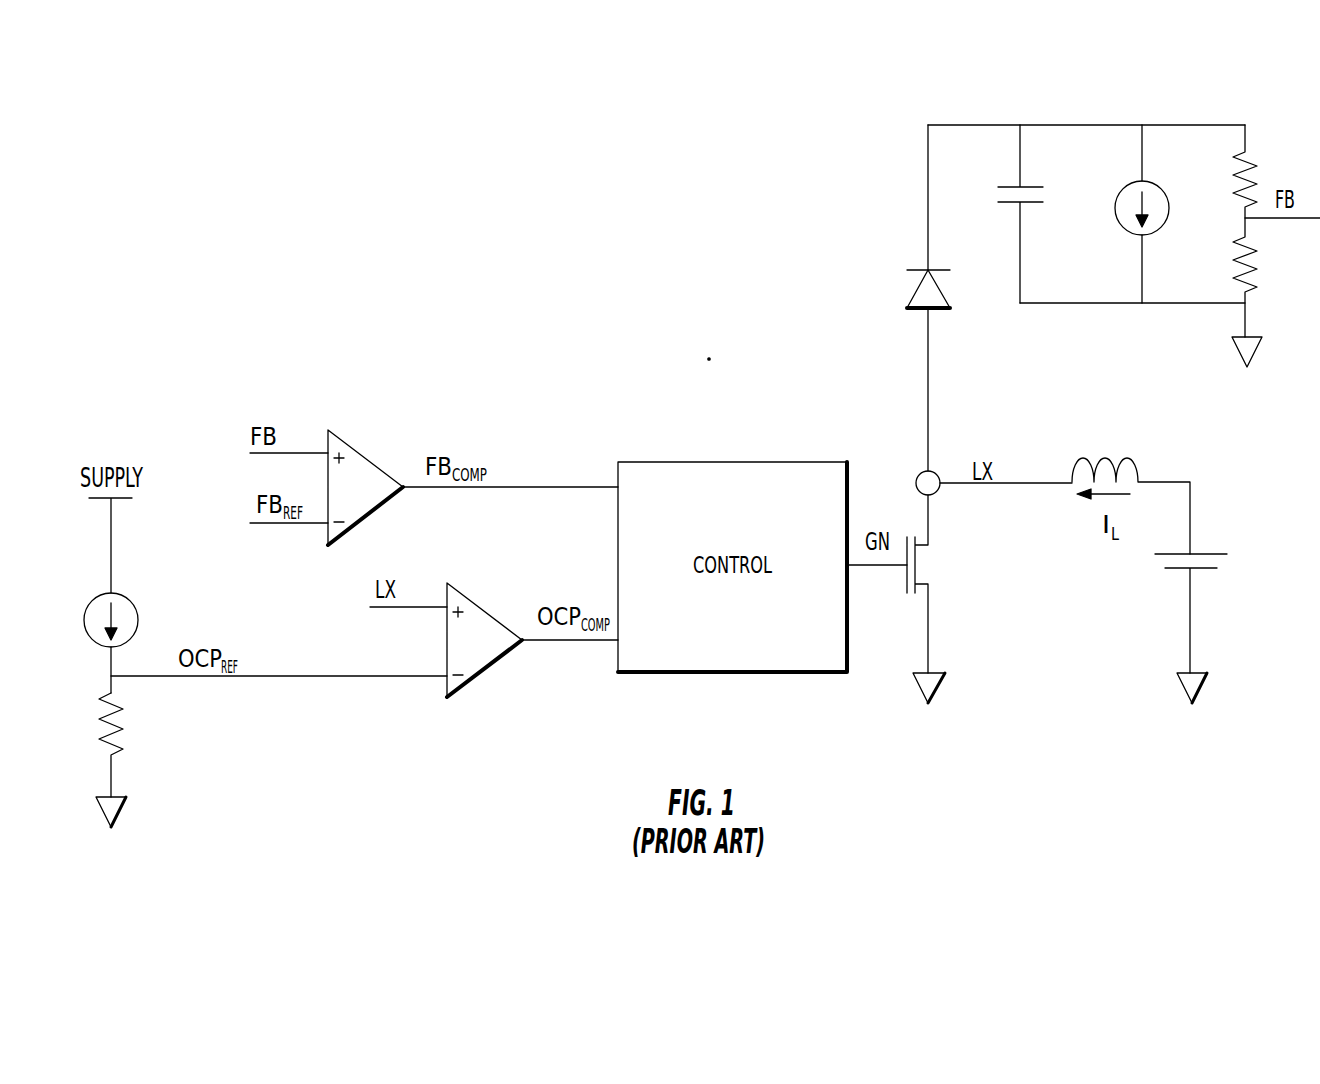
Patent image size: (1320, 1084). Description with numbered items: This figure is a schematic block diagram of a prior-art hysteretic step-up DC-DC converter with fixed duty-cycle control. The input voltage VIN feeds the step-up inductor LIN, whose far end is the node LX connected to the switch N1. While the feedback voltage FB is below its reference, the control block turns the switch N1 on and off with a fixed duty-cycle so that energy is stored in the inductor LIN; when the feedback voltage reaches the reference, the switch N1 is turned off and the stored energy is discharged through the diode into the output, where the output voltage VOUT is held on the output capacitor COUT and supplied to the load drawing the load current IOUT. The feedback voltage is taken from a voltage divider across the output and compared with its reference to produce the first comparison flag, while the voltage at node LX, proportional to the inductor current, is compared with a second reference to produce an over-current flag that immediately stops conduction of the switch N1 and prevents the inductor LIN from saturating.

The switch N1 is at (938, 599).
The step-up inductor LIN is at (1131, 482).
The input voltage VIN is at (1212, 617).
The output voltage VOUT is at (1086, 106).
The output capacitor COUT is at (1045, 214).
The load current IOUT is at (1162, 214).